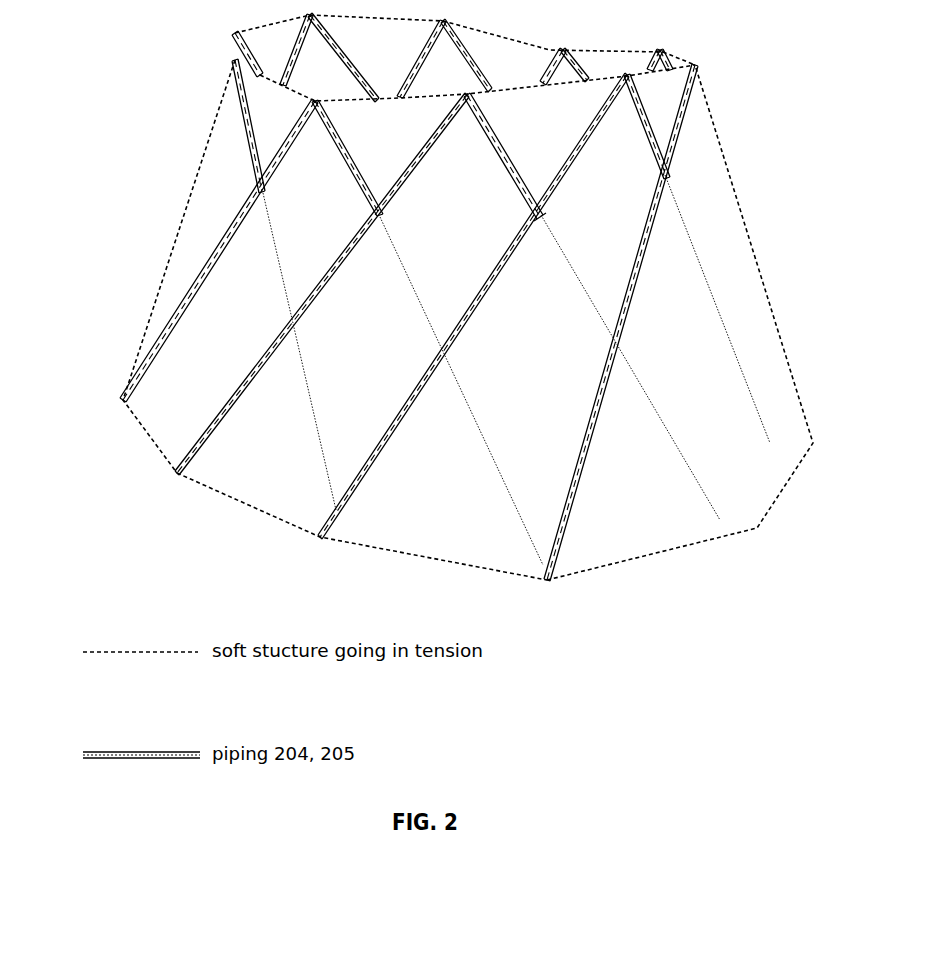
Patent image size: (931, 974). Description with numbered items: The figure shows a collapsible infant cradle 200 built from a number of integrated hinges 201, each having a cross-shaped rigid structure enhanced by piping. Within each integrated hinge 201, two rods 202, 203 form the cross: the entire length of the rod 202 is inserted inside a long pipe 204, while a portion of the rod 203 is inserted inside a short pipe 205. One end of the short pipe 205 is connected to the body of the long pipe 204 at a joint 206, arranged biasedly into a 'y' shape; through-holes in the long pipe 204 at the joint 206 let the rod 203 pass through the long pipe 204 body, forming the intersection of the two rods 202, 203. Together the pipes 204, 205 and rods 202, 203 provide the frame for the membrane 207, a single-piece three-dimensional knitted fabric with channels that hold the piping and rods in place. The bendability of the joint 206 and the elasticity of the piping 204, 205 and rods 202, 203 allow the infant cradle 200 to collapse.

The collapsible infant cradle 200 is at (731, 45).
The integrated hinge 201 is at (343, 207).
The rod 202 is at (83, 687).
The rod 203 is at (83, 721).
The long pipe 204 is at (506, 296).
The short pipe 205 is at (519, 141).
The joint 206 is at (554, 219).
The membrane 207 is at (424, 502).